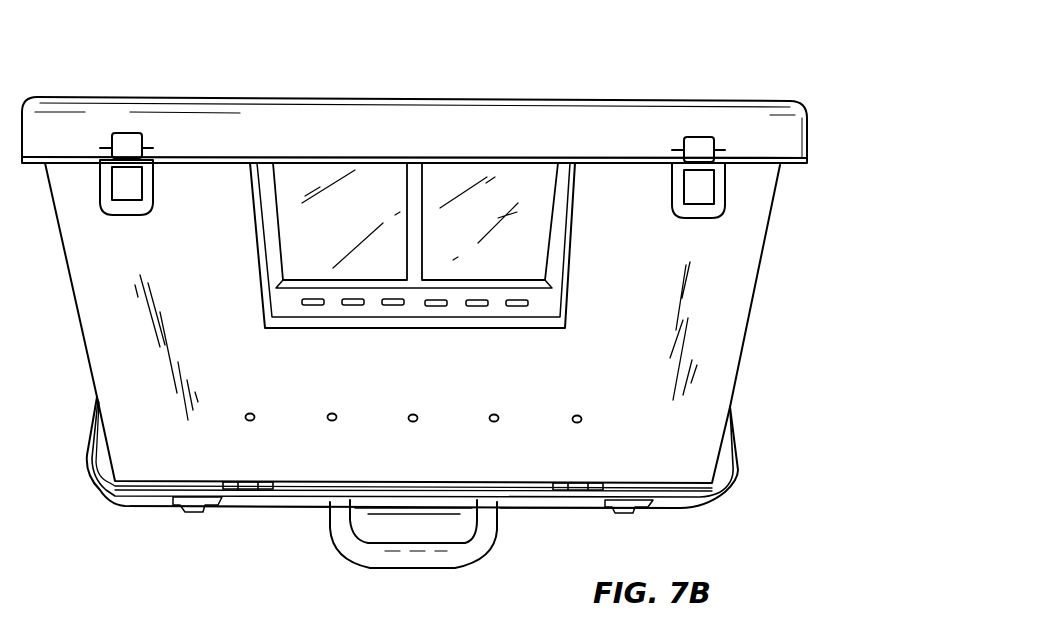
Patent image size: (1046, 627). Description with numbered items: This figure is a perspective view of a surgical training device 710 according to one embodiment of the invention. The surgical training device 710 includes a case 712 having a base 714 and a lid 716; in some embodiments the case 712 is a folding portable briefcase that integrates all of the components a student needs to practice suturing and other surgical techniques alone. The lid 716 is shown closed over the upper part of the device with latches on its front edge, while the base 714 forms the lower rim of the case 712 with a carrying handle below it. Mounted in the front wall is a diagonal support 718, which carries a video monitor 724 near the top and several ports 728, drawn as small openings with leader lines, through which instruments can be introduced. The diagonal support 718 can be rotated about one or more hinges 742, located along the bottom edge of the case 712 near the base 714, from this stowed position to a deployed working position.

The surgical training device 710 is at (778, 88).
The lid 716 is at (795, 137).
The diagonal support 718 is at (732, 322).
The video monitor 724 is at (560, 253).
The case 712 is at (752, 418).
The base 714 is at (740, 468).
The ports 728 is at (254, 415).
The hinges 742 is at (246, 490).